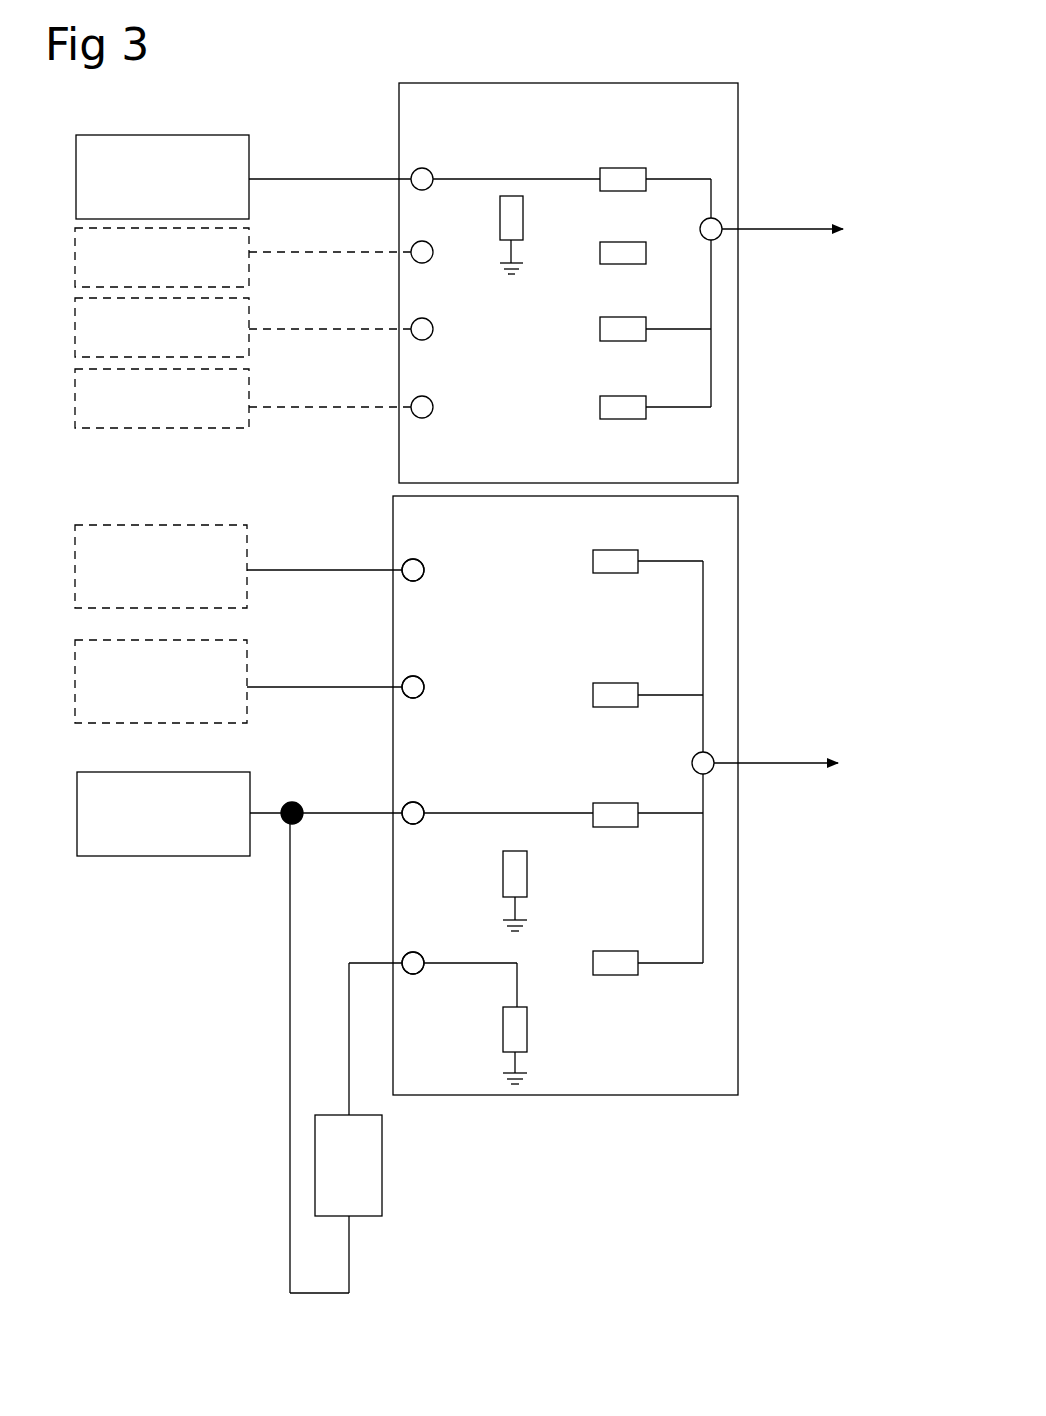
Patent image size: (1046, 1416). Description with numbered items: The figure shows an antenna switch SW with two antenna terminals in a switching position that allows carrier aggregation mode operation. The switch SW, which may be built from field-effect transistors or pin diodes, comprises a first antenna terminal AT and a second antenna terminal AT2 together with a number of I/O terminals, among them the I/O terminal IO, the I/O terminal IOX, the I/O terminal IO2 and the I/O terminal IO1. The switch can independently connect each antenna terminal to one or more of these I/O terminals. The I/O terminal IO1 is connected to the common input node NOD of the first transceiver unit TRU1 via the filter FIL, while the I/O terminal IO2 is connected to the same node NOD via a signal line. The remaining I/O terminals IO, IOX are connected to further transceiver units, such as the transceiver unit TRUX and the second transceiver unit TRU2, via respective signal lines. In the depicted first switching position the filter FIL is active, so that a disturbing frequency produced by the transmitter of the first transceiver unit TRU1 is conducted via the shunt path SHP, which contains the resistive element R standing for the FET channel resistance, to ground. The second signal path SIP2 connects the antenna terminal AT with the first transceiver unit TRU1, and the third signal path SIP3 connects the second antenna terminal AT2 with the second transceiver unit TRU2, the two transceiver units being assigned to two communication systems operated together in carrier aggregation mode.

The switch SW is at (360, 115).
The second transceiver unit TRU2 is at (243, 177).
The transceiver unit TRUX is at (238, 566).
The first transceiver unit TRU1 is at (239, 814).
The third signal path SIP3 is at (545, 182).
The second signal path SIP2 is at (520, 813).
The second antenna terminal AT2 is at (723, 243).
The antenna terminal AT is at (716, 770).
The I/O terminal IO is at (427, 578).
The I/O terminal IOX is at (395, 685).
The I/O terminal IO2 is at (395, 810).
The I/O terminal IO1 is at (403, 953).
The common input node NOD is at (288, 830).
The shunt path SHP is at (518, 983).
The resistive element R is at (520, 1035).
The filter FIL is at (382, 1200).